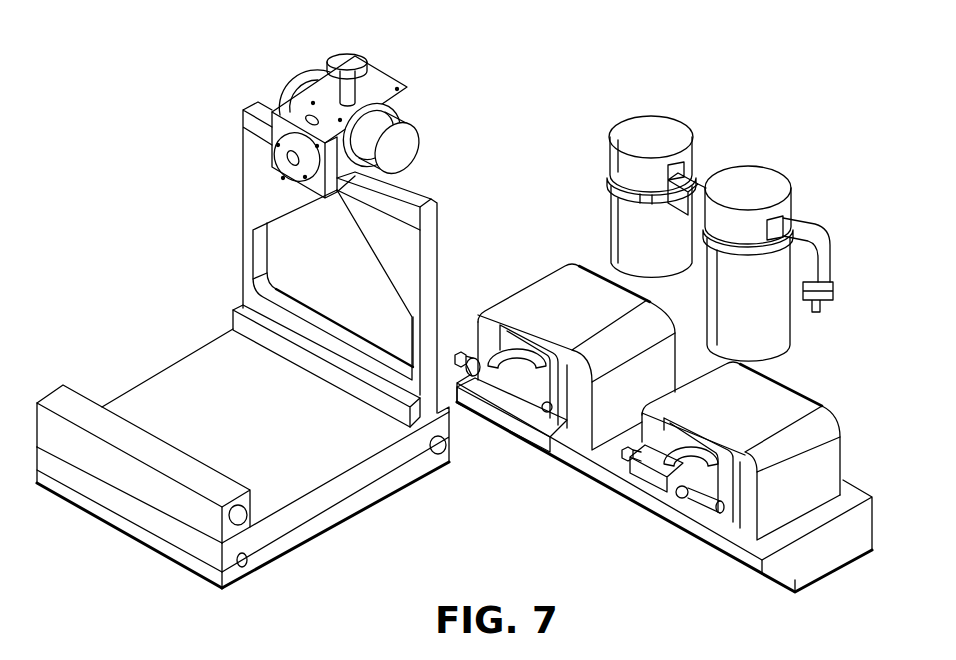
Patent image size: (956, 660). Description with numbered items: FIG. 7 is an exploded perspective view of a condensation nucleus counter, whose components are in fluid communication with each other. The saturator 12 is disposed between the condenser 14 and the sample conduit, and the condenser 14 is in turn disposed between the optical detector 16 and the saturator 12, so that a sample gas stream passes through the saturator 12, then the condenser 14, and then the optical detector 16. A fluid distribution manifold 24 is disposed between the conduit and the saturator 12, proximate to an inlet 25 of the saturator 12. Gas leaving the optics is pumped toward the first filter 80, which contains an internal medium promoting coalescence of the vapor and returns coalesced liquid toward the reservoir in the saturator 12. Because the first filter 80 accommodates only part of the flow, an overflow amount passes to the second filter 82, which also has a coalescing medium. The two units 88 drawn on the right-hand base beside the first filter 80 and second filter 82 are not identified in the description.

The base 12 is at (319, 458).
The upright frame 14 is at (255, 183).
The camera assembly 16 is at (423, 64).
The front bar 24 is at (127, 433).
The mounting hole 25 is at (237, 518).
The first reservoir 80 is at (659, 122).
The second reservoir 82 is at (762, 180).
The pump 88 is at (562, 281).